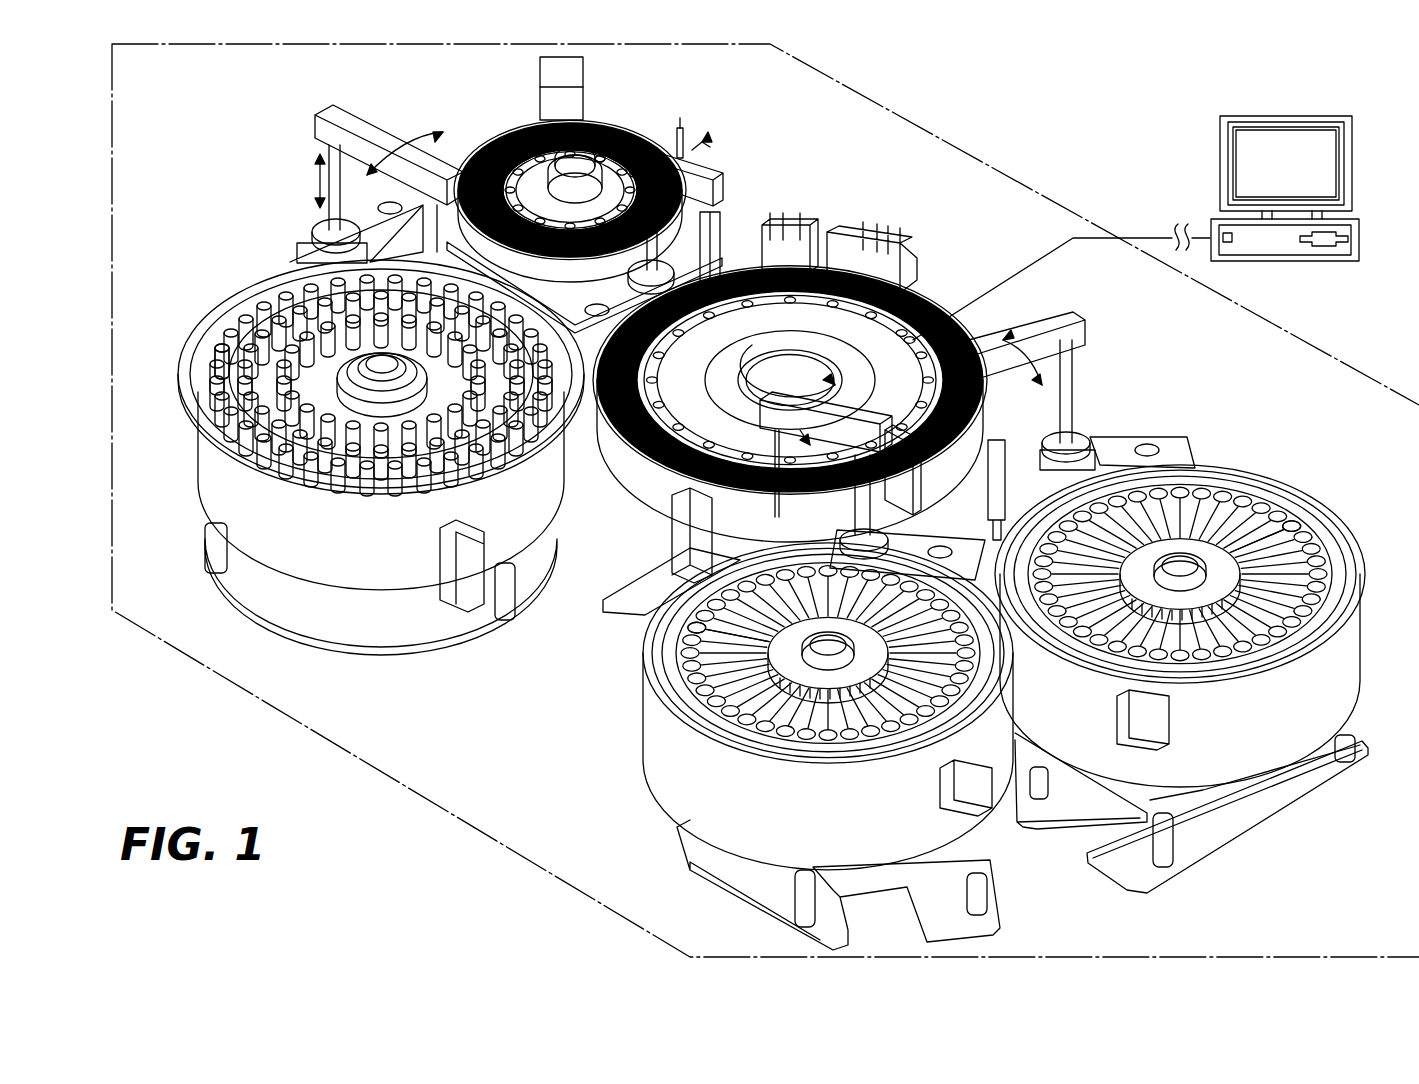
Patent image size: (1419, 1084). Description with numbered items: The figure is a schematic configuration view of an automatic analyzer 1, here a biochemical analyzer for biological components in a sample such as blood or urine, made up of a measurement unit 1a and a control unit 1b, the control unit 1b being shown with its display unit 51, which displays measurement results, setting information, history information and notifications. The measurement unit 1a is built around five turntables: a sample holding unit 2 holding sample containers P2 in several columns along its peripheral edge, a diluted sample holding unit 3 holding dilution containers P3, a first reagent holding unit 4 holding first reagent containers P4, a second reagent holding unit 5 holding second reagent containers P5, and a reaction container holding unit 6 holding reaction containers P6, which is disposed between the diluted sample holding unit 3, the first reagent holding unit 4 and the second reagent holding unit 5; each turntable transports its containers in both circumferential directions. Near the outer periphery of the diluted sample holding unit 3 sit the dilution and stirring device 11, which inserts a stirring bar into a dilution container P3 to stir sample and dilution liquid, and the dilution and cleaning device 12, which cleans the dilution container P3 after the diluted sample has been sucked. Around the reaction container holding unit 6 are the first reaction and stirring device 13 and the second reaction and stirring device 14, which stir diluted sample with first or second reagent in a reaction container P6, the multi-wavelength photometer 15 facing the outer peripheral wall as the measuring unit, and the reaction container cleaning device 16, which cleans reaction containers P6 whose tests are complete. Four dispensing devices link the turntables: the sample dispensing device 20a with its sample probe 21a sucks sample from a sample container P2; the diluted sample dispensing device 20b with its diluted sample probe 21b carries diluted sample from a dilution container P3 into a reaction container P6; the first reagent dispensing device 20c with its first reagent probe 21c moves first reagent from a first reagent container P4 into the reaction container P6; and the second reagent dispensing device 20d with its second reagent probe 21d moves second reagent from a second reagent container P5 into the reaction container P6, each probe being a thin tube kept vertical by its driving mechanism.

The automatic analyzer 1 is at (1415, 99).
The measurement unit 1a is at (983, 160).
The control unit 1b is at (1270, 116).
The display unit 51 is at (1330, 172).
The sample holding unit 2 is at (210, 463).
The diluted sample holding unit 3 is at (525, 132).
The first reagent holding unit 4 is at (663, 766).
The second reagent holding unit 5 is at (1345, 652).
The reaction container holding unit 6 is at (652, 487).
The dilution and stirring device 11 is at (570, 73).
The dilution and cleaning device 12 is at (700, 140).
The first reaction and stirring device 13 is at (903, 473).
The second reaction and stirring device 14 is at (973, 347).
The multi-wavelength photometer 15 is at (680, 523).
The reaction container cleaning device 16 is at (800, 227).
The sample dispensing device 20a is at (343, 120).
The diluted sample dispensing device 20b is at (685, 190).
The first reagent dispensing device 20c is at (843, 417).
The second reagent dispensing device 20d is at (1073, 318).
The sample probe 21a is at (333, 245).
The diluted sample probe 21b is at (720, 237).
The first reagent probe 21c is at (773, 507).
The second reagent probe 21d is at (1053, 433).
The sample container P2 is at (262, 350).
The dilution container P3 is at (622, 143).
The first reagent container P4 is at (680, 672).
The second reagent container P5 is at (1280, 500).
The reaction container P6 is at (978, 342).